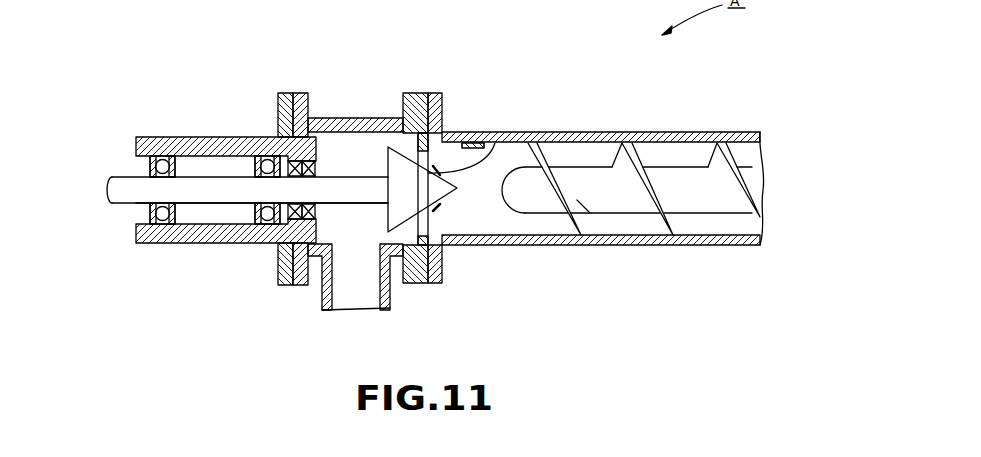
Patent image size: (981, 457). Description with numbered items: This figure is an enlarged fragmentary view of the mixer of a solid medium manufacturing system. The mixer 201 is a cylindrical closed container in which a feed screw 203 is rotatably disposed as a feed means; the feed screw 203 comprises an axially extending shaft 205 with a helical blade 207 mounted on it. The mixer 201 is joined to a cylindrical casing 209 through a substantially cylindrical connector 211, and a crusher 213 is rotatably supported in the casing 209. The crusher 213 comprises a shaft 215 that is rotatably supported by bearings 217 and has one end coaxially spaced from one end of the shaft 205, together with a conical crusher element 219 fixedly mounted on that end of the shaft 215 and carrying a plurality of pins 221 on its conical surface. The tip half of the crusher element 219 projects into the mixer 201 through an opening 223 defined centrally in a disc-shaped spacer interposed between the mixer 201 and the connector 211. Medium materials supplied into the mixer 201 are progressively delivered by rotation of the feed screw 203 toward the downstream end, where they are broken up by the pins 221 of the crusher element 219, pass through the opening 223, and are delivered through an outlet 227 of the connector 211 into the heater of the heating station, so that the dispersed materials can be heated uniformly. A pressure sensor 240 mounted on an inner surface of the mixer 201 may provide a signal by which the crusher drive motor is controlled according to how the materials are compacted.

The mixer 201 is at (593, 248).
The feed screw 203 is at (593, 185).
The shaft 205 is at (717, 203).
The helical blade 207 is at (638, 158).
The casing 209 is at (213, 142).
The connector 211 is at (351, 118).
The crusher 213 is at (244, 190).
The shaft 215 is at (195, 193).
The bearings 217 is at (158, 160).
The conical crusher element 219 is at (392, 212).
The pins 221 is at (423, 93).
The opening 223 is at (427, 217).
The outlet 227 is at (482, 198).
The pressure sensor 240 is at (484, 150).